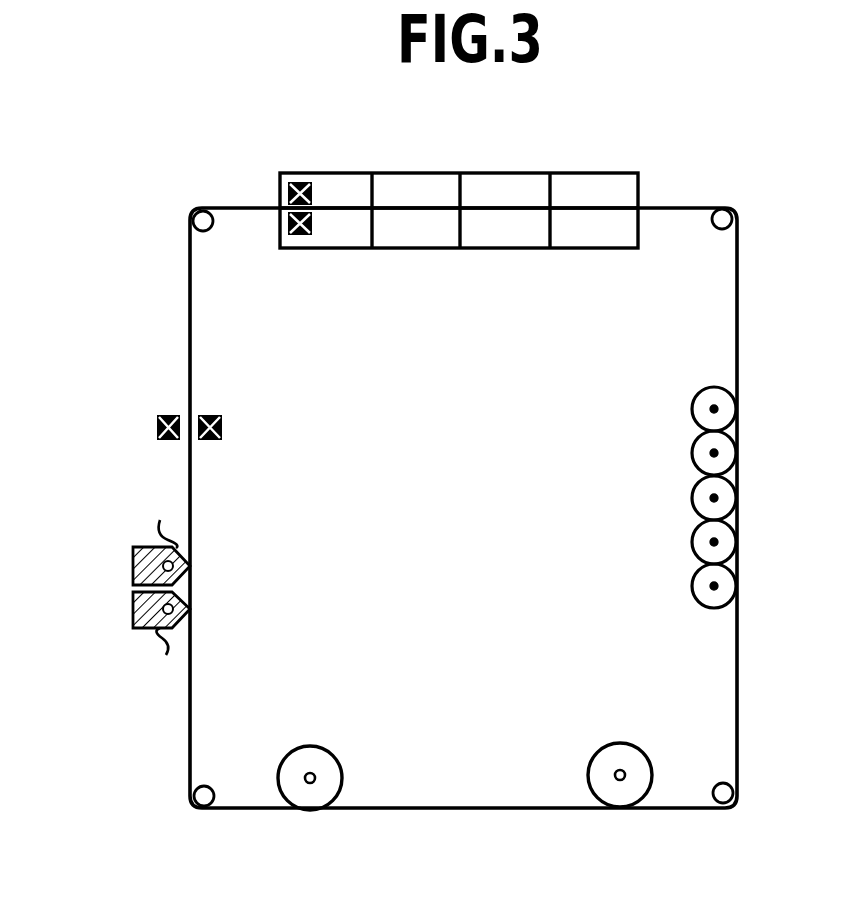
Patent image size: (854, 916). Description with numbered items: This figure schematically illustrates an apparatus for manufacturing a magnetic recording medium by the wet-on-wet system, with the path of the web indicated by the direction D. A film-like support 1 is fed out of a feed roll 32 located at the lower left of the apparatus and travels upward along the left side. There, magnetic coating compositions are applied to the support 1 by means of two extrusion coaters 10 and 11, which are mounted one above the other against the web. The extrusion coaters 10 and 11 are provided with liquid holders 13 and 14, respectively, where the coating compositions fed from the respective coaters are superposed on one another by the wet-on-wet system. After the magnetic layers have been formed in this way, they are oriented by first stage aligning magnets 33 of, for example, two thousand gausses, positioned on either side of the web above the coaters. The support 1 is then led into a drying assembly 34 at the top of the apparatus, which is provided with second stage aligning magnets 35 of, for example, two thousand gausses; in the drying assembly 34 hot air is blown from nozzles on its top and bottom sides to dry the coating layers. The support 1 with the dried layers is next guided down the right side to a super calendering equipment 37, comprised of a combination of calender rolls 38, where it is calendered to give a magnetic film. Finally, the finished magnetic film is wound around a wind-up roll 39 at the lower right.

The film-like support 1 is at (192, 698).
The extrusion coater 10 is at (133, 601).
The extrusion coater 11 is at (133, 558).
The liquid holder 13 is at (161, 664).
The liquid holder 14 is at (161, 517).
The feed roll 32 is at (316, 772).
The first stage aligning magnets 33 is at (222, 426).
The drying assembly 34 is at (412, 253).
The second stage aligning magnets 35 is at (300, 250).
The super calendering equipment 37 is at (660, 491).
The calender rolls 38 is at (700, 409).
The wind-up roll 39 is at (619, 769).
The conveying direction D is at (164, 324).